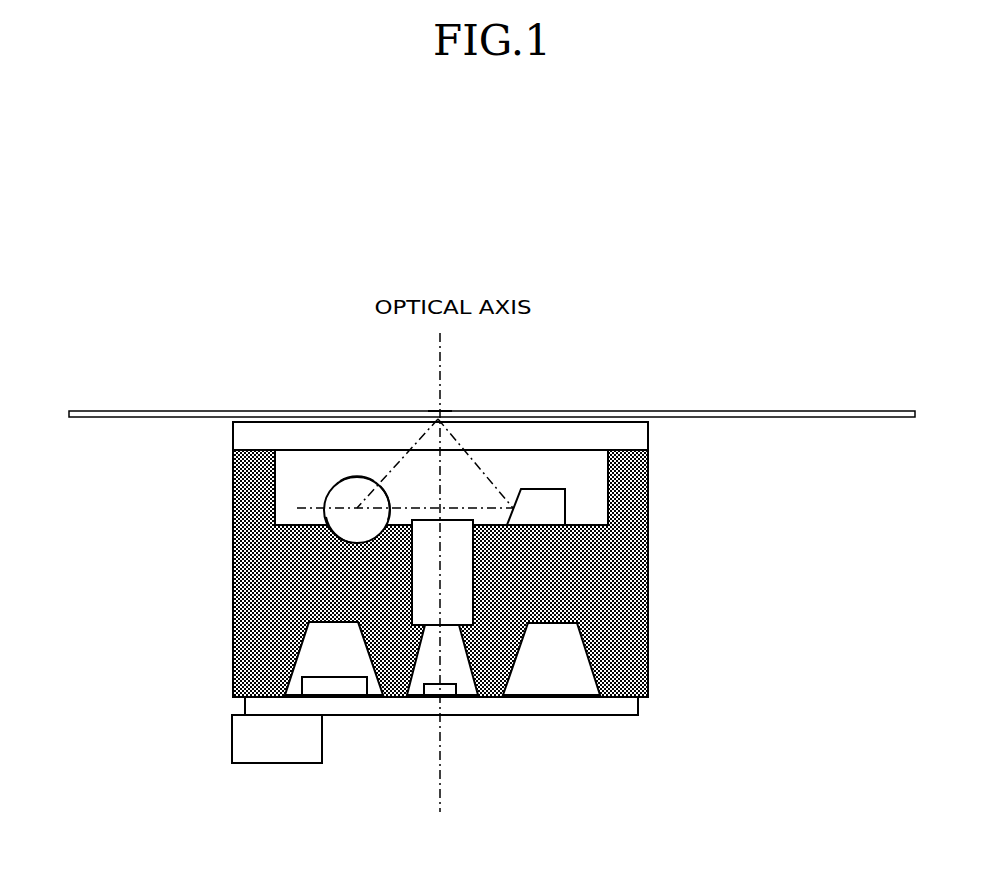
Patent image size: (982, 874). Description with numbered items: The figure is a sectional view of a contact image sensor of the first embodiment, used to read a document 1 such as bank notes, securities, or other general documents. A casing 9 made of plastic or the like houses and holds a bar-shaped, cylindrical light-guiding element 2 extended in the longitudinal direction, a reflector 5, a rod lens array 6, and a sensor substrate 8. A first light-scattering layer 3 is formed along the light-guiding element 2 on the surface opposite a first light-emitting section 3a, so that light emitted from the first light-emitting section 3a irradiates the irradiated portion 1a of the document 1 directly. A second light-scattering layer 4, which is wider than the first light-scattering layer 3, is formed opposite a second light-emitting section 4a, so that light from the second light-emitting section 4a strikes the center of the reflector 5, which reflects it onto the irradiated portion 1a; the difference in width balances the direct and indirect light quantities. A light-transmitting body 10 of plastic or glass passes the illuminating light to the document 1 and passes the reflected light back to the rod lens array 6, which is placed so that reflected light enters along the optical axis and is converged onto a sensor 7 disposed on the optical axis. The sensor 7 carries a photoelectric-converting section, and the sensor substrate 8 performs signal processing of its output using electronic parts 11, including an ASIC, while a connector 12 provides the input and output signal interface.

The document 1 is at (702, 410).
The irradiated portion 1a is at (448, 410).
The light-guiding element 2 is at (320, 498).
The first light-scattering layer 3 is at (340, 535).
The first light-emitting section 3a is at (357, 478).
The second light-scattering layer 4 is at (335, 508).
The second light-emitting section 4a is at (392, 506).
The reflector 5 is at (560, 505).
The rod lens array 6 is at (470, 577).
The sensor 7 is at (433, 698).
The sensor substrate 8 is at (555, 710).
The casing 9 is at (623, 670).
The light-transmitting body 10 is at (246, 438).
The electronic parts 11 is at (300, 678).
The connector 12 is at (232, 747).